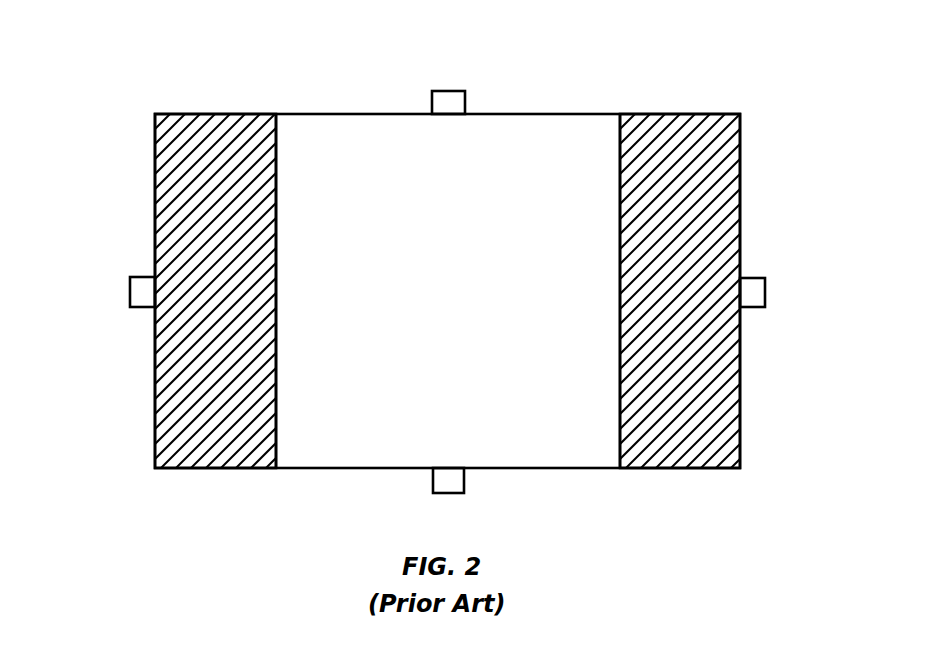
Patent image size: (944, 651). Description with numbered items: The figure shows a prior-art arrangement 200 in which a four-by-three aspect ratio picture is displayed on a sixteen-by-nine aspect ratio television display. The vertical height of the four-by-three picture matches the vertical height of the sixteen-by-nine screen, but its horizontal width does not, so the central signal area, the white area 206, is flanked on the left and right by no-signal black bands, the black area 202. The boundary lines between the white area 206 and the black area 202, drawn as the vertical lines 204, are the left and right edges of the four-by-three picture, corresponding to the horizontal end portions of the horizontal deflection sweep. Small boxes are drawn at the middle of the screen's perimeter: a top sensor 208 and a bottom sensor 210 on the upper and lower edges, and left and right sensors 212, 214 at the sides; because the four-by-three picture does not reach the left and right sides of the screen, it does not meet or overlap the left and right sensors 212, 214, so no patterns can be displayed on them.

The prior art filter device 200 is at (491, 76).
The black area 202 is at (217, 113).
The electrode inner edges 204 is at (276, 113).
The white area 206 is at (510, 113).
The top terminal tab 208 is at (448, 90).
The bottom terminal tab 210 is at (448, 494).
The left terminal tab 212 is at (130, 292).
The right terminal tab 214 is at (765, 290).